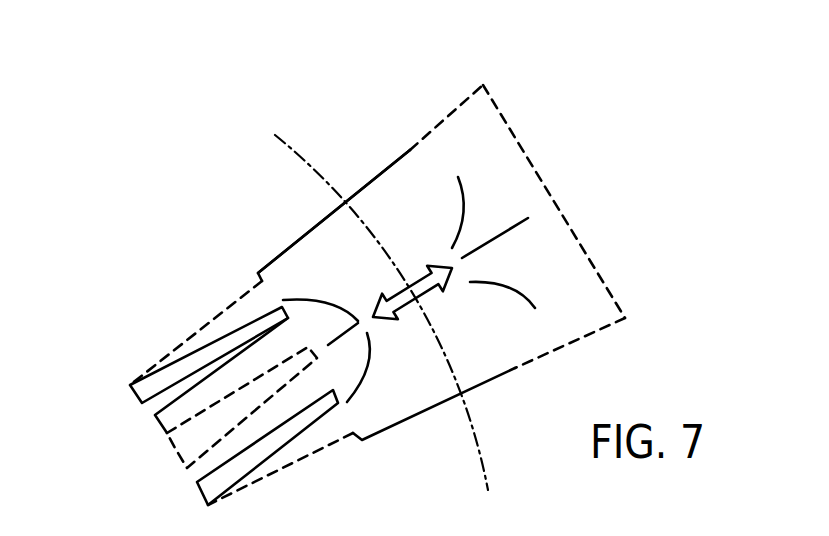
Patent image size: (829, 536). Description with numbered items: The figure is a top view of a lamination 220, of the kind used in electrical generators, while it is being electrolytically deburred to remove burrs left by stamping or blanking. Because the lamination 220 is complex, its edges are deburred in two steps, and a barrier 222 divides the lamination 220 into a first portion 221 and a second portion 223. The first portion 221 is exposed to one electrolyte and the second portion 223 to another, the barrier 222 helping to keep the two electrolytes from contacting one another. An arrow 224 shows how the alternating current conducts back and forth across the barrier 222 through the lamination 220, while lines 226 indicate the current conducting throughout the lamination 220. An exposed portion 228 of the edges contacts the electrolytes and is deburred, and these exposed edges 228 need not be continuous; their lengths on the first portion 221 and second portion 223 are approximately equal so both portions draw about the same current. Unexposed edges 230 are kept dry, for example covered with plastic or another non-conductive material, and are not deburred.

The lamination 220 is at (594, 40).
The first portion 221 is at (314, 90).
The barrier 222 is at (297, 153).
The second portion 223 is at (212, 175).
The arrow 224 is at (428, 262).
The lines 226 is at (463, 203).
The exposed portion 228 is at (527, 139).
The unexposed edges 230 is at (287, 245).